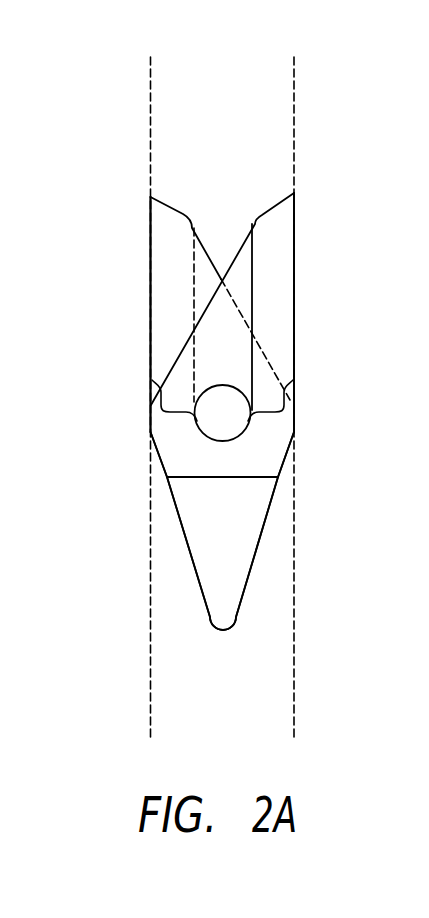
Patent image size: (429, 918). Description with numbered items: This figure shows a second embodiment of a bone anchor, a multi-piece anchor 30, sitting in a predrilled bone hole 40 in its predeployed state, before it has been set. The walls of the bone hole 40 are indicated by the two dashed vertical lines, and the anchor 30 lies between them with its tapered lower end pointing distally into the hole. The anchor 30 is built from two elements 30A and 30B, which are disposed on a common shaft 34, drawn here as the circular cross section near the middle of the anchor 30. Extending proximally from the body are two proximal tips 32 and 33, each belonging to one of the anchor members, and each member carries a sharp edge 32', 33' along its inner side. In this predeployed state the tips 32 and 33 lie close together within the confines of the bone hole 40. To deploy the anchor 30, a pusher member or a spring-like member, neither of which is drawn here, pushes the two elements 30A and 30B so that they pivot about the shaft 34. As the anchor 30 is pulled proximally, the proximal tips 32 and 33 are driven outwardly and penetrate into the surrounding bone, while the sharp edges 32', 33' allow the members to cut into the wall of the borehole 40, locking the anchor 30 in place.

The multi-piece anchor 30 is at (308, 292).
The anchor element 30A is at (296, 328).
The anchor element 30B is at (167, 293).
The proximal tip 32 is at (244, 288).
The sharp edge 32' is at (300, 314).
The proximal tip 33 is at (198, 276).
The sharp edge 33' is at (143, 305).
The common shaft 34 is at (223, 420).
The bone hole 40 is at (294, 127).